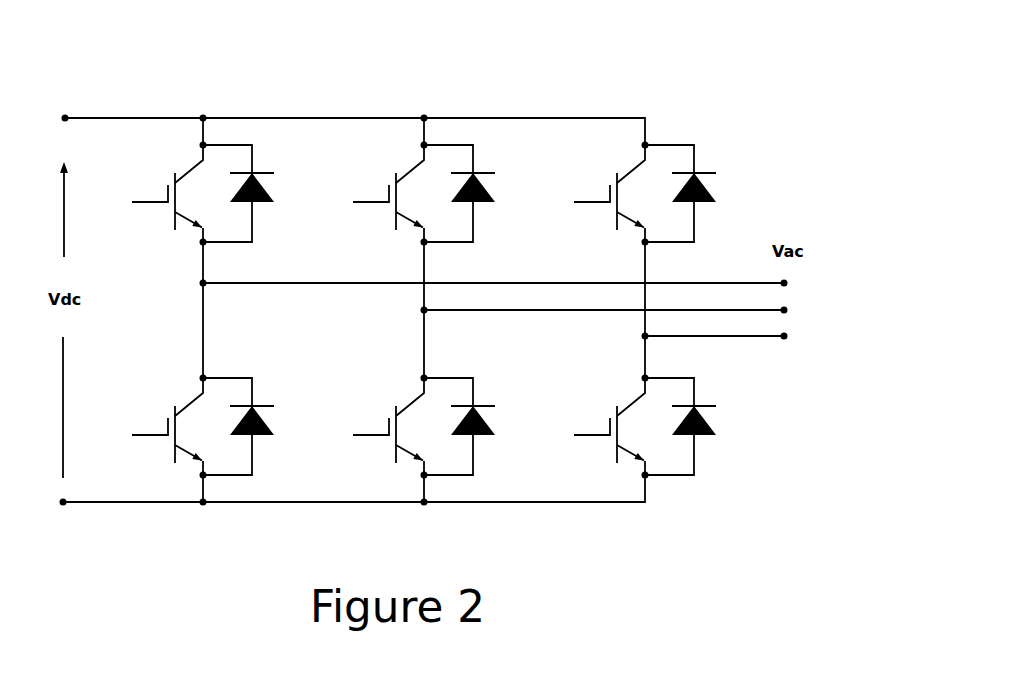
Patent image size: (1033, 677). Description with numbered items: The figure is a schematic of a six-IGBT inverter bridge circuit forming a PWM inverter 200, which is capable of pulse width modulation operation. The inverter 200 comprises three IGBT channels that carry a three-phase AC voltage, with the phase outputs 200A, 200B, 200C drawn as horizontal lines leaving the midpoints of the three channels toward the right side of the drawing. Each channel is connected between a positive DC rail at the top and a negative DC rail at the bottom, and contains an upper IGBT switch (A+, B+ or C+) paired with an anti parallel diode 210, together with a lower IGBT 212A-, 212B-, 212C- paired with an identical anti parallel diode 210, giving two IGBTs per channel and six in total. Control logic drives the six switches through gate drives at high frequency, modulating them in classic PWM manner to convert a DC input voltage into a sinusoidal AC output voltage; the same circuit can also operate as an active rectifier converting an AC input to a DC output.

The PWM inverter 200 is at (581, 28).
The phase A AC output 200A is at (552, 263).
The phase B AC output 200B is at (662, 308).
The phase C AC output 200C is at (772, 359).
The anti parallel diode 210 is at (497, 319).
The lower IGBT 212A- is at (144, 427).
The lower IGBT 212B- is at (363, 427).
The lower IGBT 212C- is at (582, 427).